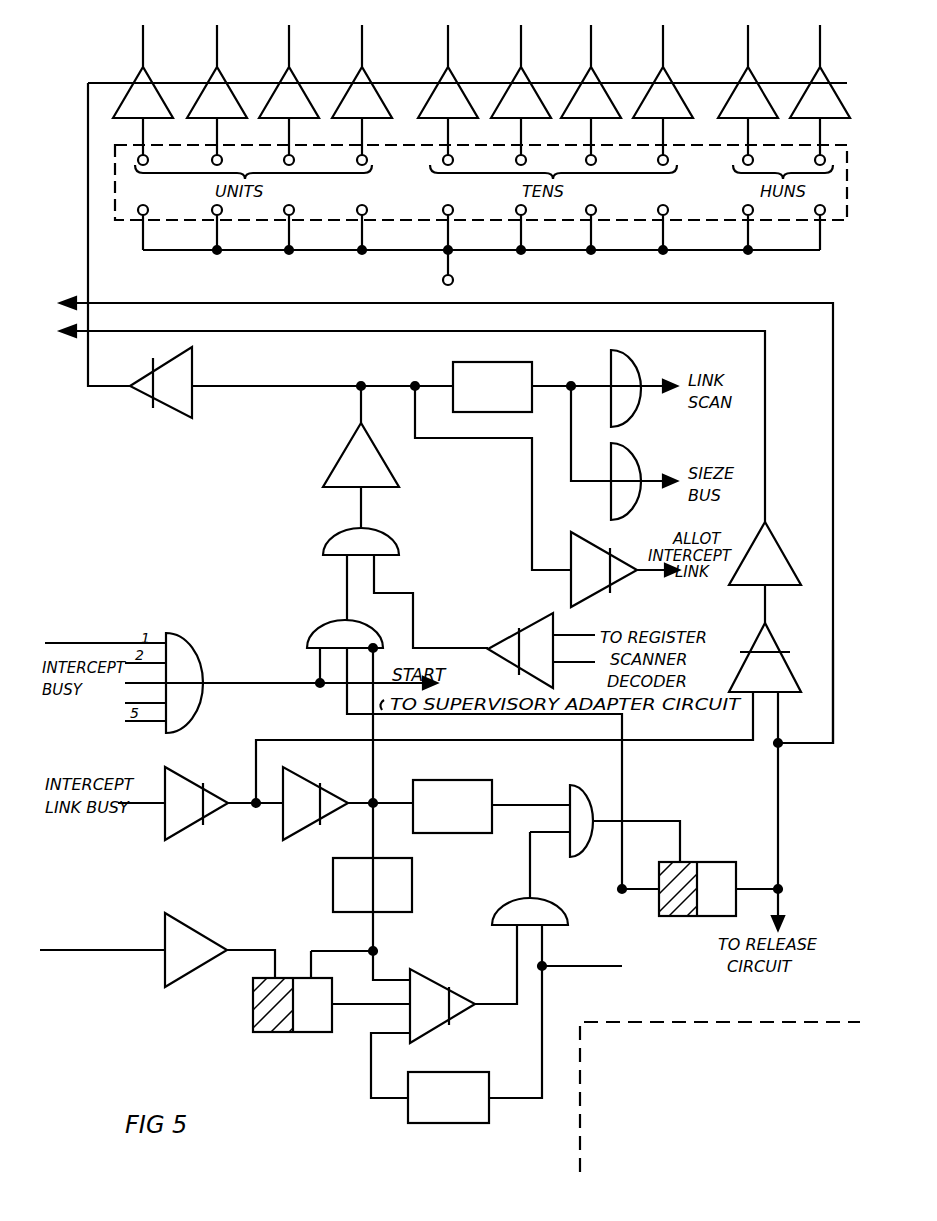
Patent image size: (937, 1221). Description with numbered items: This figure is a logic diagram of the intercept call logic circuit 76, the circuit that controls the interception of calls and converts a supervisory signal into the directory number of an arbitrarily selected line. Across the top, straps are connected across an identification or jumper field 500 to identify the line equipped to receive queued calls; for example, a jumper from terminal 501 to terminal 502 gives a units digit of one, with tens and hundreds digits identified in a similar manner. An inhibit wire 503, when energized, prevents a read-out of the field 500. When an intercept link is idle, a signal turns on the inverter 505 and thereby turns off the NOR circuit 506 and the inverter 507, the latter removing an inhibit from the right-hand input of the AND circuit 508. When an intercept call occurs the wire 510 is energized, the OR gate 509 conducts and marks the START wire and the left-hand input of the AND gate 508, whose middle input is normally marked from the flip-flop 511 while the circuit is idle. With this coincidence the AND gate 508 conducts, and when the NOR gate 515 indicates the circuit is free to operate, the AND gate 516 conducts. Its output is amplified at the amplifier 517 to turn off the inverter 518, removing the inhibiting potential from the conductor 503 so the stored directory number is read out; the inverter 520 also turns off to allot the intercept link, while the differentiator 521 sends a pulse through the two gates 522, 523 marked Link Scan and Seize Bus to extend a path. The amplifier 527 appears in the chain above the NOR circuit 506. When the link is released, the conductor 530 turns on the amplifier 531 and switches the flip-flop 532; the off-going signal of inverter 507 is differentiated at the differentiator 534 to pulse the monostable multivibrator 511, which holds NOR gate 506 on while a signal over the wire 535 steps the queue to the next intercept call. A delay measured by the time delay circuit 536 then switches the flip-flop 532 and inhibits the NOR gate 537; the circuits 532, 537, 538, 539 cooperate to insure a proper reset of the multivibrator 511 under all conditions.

The identification or jumper field 500 is at (88, 222).
The terminal 501 is at (147, 210).
The terminal 502 is at (145, 126).
The inhibit wire 503 is at (90, 392).
The inverter 505 is at (195, 779).
The NOR circuit 506 is at (785, 647).
The inverter 507 is at (317, 779).
The AND circuit 508 is at (312, 621).
The OR gate 509 is at (201, 662).
The wire 510 is at (96, 639).
The monostable multivibrator 511 is at (689, 859).
The NOR gate 515 is at (538, 621).
The AND gate 516 is at (396, 550).
The amplifier 517 is at (396, 478).
The inverter 518 is at (193, 402).
The inverter 520 is at (588, 538).
The differentiator 521 is at (517, 356).
The gate 522 is at (636, 366).
The gate 523 is at (636, 459).
The amplifier 527 is at (785, 545).
The conductor 530 is at (92, 944).
The amplifier 531 is at (210, 937).
The flip-flop 532 is at (331, 1033).
The differentiator 534 is at (434, 770).
The wire 535 is at (790, 748).
The time delay circuit 536 is at (411, 864).
The NOR gate 537 is at (432, 976).
The differentiator 538 is at (437, 1067).
The gate 539 is at (552, 906).
The intercept call logic circuit 76 is at (665, 1112).